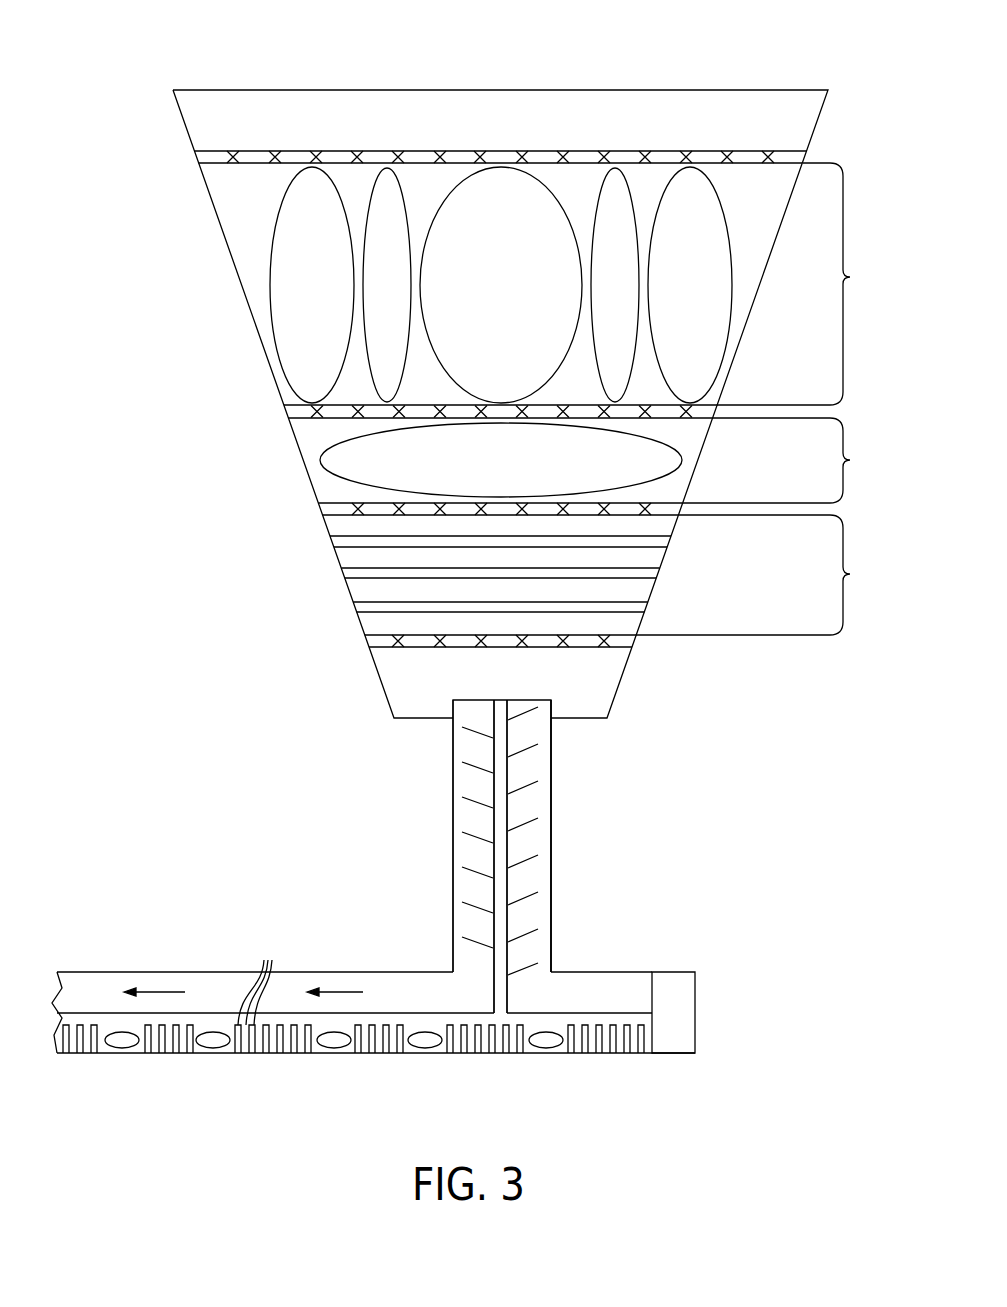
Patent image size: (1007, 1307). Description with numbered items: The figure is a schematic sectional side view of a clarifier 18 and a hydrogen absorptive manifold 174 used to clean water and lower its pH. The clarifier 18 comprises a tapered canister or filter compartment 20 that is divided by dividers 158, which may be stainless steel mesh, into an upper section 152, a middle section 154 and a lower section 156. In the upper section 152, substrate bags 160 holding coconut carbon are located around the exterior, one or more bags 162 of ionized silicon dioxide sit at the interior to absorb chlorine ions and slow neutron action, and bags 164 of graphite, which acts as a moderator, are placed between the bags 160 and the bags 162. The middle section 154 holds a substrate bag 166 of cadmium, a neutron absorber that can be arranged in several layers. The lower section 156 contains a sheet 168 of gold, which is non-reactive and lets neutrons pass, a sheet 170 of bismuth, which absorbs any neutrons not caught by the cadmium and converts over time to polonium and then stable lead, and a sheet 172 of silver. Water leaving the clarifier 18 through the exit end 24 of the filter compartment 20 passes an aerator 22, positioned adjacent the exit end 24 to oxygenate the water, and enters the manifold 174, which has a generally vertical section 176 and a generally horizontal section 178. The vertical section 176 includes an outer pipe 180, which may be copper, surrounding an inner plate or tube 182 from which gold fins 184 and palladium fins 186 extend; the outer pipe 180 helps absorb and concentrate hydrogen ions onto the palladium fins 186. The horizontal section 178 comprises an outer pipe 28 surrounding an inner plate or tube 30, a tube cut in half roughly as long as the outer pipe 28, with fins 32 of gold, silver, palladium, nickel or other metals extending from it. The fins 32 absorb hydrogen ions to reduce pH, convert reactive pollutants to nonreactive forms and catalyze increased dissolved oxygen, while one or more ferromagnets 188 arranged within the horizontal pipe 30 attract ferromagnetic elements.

The clarifier 18 is at (858, 78).
The filter compartment 20 is at (216, 265).
The aerator 22 is at (672, 980).
The exit end 24 is at (562, 697).
The outer pipe 28 is at (88, 972).
The inner plate or tube 30 is at (383, 1012).
The fins 32 is at (258, 979).
The upper section 152 is at (809, 284).
The middle section 154 is at (792, 460).
The lower section 156 is at (769, 575).
The dividers 158 is at (197, 152).
The substrate bags 160 is at (314, 172).
The bags 162 is at (500, 172).
The bags 164 is at (389, 172).
The substrate bag 166 is at (320, 460).
The sheet of gold 168 is at (333, 540).
The sheet of bismuth 170 is at (342, 571).
The sheet of silver 172 is at (355, 604).
The hydrogen absorptive manifold 174 is at (277, 835).
The vertical section 176 is at (436, 845).
The horizontal section 178 is at (193, 953).
The outer pipe 180 is at (550, 898).
The inner plate or tube 182 is at (503, 843).
The gold fins 184 is at (470, 765).
The palladium fins 186 is at (530, 786).
The ferromagnets 188 is at (122, 1047).